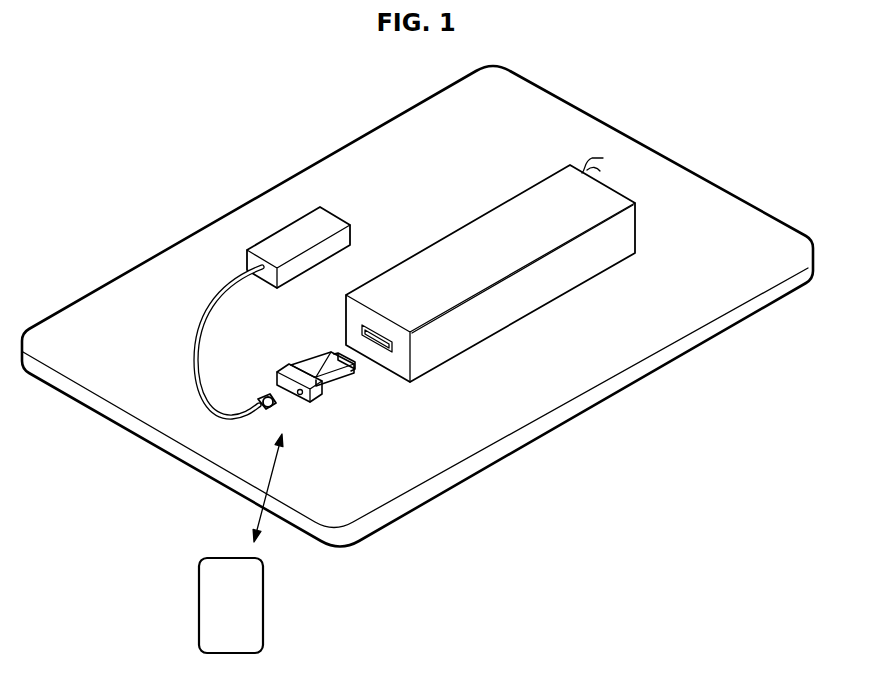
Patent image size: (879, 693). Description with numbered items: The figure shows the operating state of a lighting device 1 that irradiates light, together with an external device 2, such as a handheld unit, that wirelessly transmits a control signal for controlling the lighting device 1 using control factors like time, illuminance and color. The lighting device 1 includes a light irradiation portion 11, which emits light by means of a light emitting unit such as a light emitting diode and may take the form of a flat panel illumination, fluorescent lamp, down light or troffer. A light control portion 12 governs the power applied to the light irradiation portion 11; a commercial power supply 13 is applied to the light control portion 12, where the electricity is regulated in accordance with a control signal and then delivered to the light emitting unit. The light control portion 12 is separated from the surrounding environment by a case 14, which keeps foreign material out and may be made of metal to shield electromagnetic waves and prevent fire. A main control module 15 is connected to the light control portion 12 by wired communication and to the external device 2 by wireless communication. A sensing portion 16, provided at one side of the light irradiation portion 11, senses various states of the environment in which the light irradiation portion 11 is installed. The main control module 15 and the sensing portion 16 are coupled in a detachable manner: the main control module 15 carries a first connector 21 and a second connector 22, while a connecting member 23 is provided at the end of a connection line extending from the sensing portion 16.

The lighting device 1 is at (703, 178).
The external device 2 is at (265, 612).
The light irradiation portion 11 is at (558, 399).
The light control portion 12 is at (553, 283).
The commercial power supply 13 is at (585, 165).
The case 14 is at (446, 345).
The main control module 15 is at (333, 393).
The sensing portion 16 is at (330, 214).
The first connector 21 is at (296, 406).
The second connector 22 is at (341, 357).
The connecting member 23 is at (262, 395).